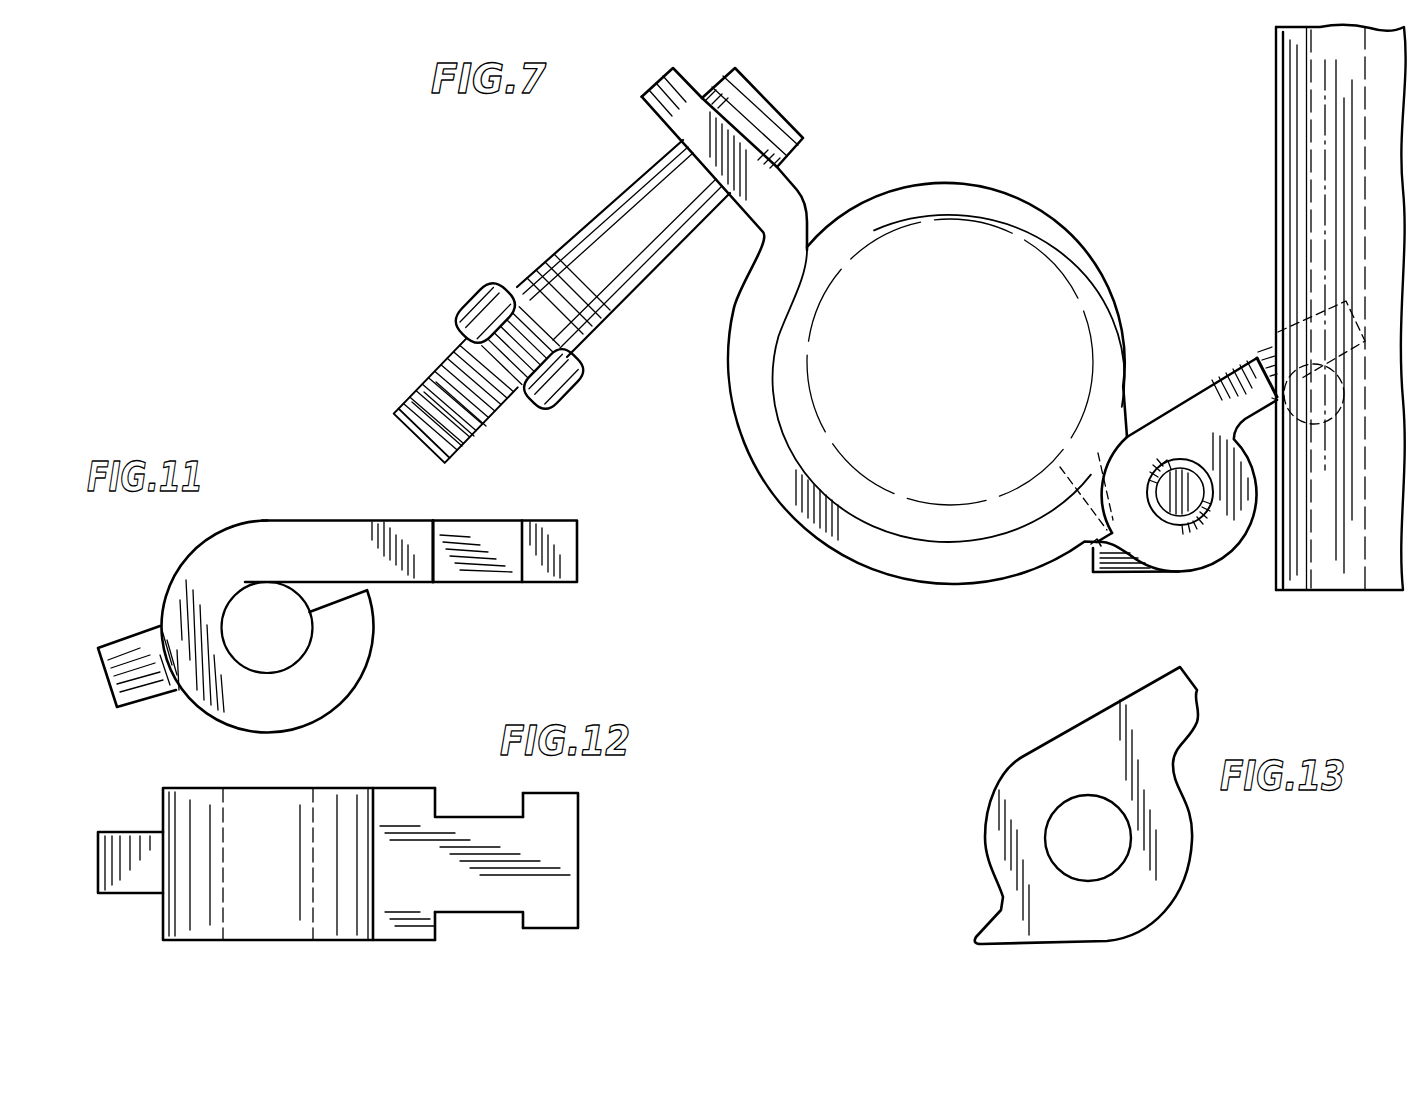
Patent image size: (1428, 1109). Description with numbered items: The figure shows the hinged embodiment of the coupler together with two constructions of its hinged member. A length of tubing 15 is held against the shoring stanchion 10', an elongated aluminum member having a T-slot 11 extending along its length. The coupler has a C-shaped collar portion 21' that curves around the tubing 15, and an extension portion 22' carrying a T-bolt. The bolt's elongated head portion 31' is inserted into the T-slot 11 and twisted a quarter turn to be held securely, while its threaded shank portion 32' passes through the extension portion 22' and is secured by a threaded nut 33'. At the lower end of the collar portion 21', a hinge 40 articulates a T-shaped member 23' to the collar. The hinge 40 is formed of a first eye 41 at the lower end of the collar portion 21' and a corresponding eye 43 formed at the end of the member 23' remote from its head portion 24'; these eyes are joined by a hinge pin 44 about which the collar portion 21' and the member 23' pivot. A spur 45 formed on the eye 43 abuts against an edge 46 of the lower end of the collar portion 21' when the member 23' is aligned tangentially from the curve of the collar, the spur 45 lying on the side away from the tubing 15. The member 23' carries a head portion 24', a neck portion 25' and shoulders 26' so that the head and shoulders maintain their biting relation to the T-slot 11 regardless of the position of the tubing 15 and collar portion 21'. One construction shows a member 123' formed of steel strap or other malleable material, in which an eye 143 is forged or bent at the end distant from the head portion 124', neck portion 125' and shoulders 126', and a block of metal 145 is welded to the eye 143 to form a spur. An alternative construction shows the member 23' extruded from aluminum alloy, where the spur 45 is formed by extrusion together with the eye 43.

In FIG. 7, the shoring stanchion 10' is at (1342, 307).
In FIG. 7, the T-slot 11 is at (1339, 200).
In FIG. 7, the tubing 15 is at (908, 503).
In FIG. 7, the collar portion 21' is at (884, 340).
In FIG. 7, the extension portion 22' is at (746, 159).
In FIG. 7, the T-shaped member 23' is at (1222, 370).
In FIG. 13, the T-shaped member 23' is at (1217, 715).
In FIG. 7, the head portion 24' is at (1344, 362).
In FIG. 7, the neck portion 25' is at (1265, 423).
In FIG. 7, the shoulders 26' is at (1247, 346).
In FIG. 7, the head portion of T-bolt 31' is at (769, 118).
In FIG. 7, the threaded shank portion 32' is at (562, 301).
In FIG. 7, the threaded nut 33' is at (529, 362).
In FIG. 7, the hinge 40 is at (1244, 547).
In FIG. 7, the first eye 41 is at (1218, 554).
In FIG. 7, the eye 43 is at (1077, 470).
In FIG. 13, the eye 43 is at (1100, 774).
In FIG. 7, the hinge pin 44 is at (1182, 468).
In FIG. 7, the spur 45 is at (1095, 572).
In FIG. 13, the spur 45 is at (995, 916).
In FIG. 7, the edge 46 is at (1097, 543).
In FIG. 11, the member 123' is at (339, 552).
In FIG. 12, the member 123' is at (421, 864).
In FIG. 11, the head portion 124' is at (583, 552).
In FIG. 12, the head portion 124' is at (586, 860).
In FIG. 11, the neck portion 125' is at (505, 582).
In FIG. 12, the neck portion 125' is at (502, 860).
In FIG. 11, the shoulders 126' is at (467, 580).
In FIG. 12, the shoulders 126' is at (470, 843).
In FIG. 11, the eye 143 is at (330, 702).
In FIG. 12, the eye 143 is at (280, 869).
In FIG. 11, the block of metal / spur 145 is at (134, 698).
In FIG. 12, the block of metal / spur 145 is at (130, 897).